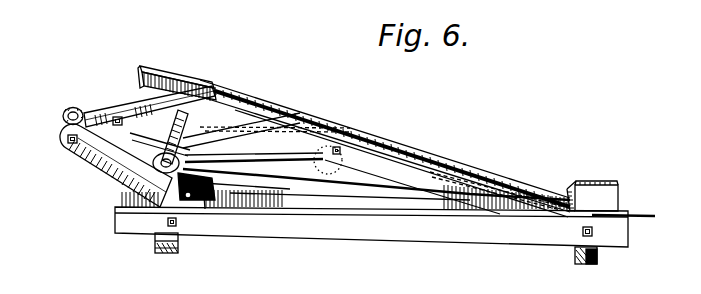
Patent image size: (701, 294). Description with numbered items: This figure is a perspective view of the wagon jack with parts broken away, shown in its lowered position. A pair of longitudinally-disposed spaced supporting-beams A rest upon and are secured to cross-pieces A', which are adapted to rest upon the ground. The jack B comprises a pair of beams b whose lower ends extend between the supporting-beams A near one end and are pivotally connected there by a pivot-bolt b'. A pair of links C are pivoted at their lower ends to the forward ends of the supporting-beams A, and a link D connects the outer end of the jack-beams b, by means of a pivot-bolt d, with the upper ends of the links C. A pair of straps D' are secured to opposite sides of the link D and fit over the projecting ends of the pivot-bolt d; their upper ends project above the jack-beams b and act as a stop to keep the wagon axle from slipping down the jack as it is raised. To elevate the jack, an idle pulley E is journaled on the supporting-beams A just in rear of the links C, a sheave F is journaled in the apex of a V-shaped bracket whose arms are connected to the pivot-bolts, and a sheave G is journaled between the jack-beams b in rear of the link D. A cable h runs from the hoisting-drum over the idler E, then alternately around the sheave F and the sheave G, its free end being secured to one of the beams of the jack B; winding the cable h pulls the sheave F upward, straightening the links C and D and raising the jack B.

The supporting-beams A is at (371, 217).
The cross-pieces A' is at (387, 260).
The jack B is at (416, 153).
The jack-beams b is at (445, 177).
The pivot-bolt b' is at (592, 212).
The links C is at (73, 107).
The link D is at (149, 104).
The straps D' is at (185, 74).
The pivot-bolt d is at (238, 91).
The idle pulley E is at (252, 143).
The sheave F is at (172, 121).
The sheave G is at (348, 131).
The cable h is at (640, 216).